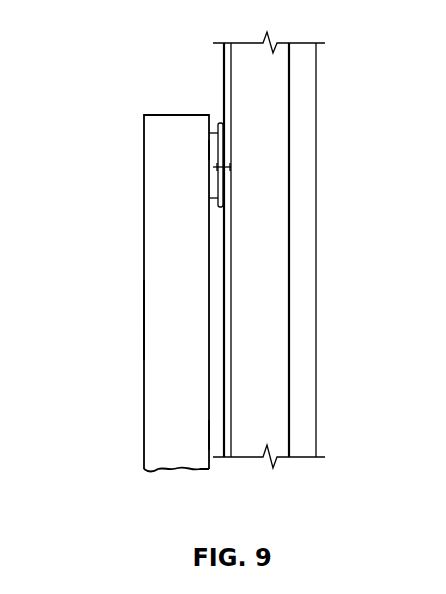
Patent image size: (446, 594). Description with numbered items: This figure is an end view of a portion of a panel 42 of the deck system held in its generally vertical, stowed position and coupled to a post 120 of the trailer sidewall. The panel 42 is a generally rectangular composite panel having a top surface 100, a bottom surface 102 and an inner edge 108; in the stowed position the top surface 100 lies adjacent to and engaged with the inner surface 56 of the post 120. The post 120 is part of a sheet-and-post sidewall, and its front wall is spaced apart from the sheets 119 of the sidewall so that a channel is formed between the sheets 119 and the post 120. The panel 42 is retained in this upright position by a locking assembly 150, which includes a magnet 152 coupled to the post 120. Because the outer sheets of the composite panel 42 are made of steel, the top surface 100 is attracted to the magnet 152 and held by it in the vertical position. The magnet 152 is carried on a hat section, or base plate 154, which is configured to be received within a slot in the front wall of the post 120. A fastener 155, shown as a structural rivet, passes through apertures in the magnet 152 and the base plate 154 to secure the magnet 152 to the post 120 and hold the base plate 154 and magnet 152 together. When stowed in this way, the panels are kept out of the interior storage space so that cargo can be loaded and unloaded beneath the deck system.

The panel 42 is at (141, 345).
The inner surface 56 is at (223, 433).
The top surface 100 is at (210, 263).
The bottom surface 102 is at (143, 312).
The inner edge 108 is at (160, 115).
The sheets 119 is at (302, 302).
The post 120 is at (270, 362).
The locking assembly 150 is at (216, 114).
The magnet 152 is at (208, 190).
The base plate 154 is at (214, 142).
The fastener 155 is at (213, 167).